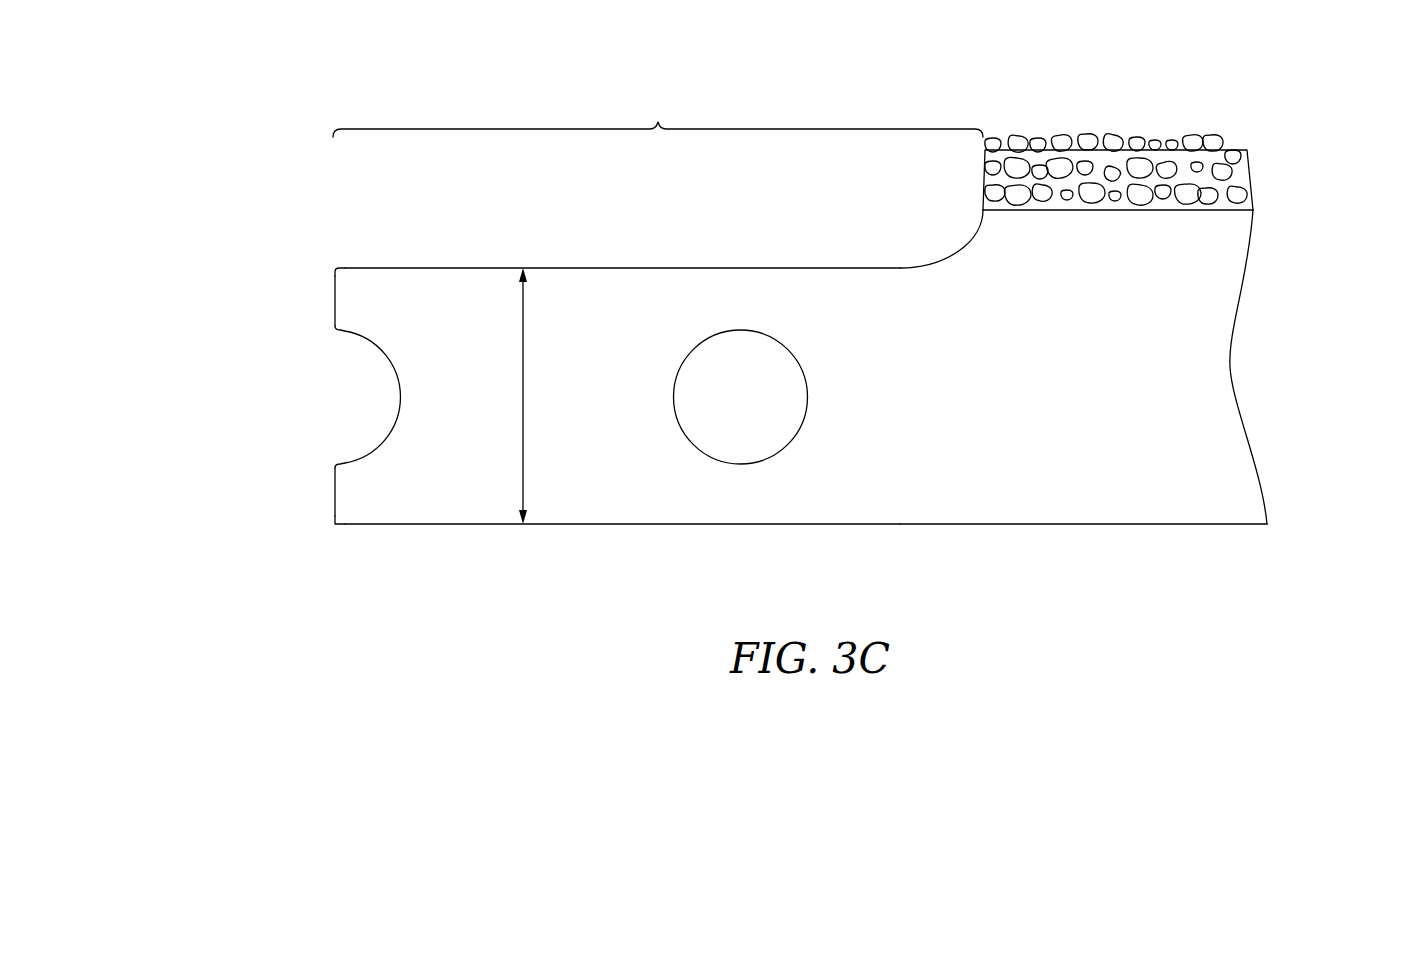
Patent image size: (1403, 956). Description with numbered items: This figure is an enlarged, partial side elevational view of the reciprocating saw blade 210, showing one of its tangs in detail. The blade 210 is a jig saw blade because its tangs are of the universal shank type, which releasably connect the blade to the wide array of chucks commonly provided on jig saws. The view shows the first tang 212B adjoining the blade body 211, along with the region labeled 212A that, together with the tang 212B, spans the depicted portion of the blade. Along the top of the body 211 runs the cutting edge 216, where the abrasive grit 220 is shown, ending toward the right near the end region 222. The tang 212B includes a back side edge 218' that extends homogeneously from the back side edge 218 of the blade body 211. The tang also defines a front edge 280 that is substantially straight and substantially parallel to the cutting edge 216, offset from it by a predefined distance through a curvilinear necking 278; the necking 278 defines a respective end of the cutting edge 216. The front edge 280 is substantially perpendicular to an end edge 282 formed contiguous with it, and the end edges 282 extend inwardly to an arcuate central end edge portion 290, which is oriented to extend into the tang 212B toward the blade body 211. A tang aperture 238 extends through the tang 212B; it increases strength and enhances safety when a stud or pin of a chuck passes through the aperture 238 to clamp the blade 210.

The reciprocating saw blade 210 is at (592, 252).
The blade body 211 is at (1178, 482).
The first portion of blade 212A is at (658, 116).
The first tang 212B is at (286, 408).
The cutting edge 216 is at (1060, 126).
The back side edge 218 is at (1083, 545).
The back side edge 218' is at (622, 548).
The abrasive particles 220 is at (1193, 140).
The end of blade 222 is at (1292, 167).
The tang aperture 238 is at (796, 398).
The necking 278 is at (960, 243).
The front edge 280 is at (743, 268).
The end edge 282 is at (333, 283).
The arcuate central end edge portion 290 is at (385, 445).